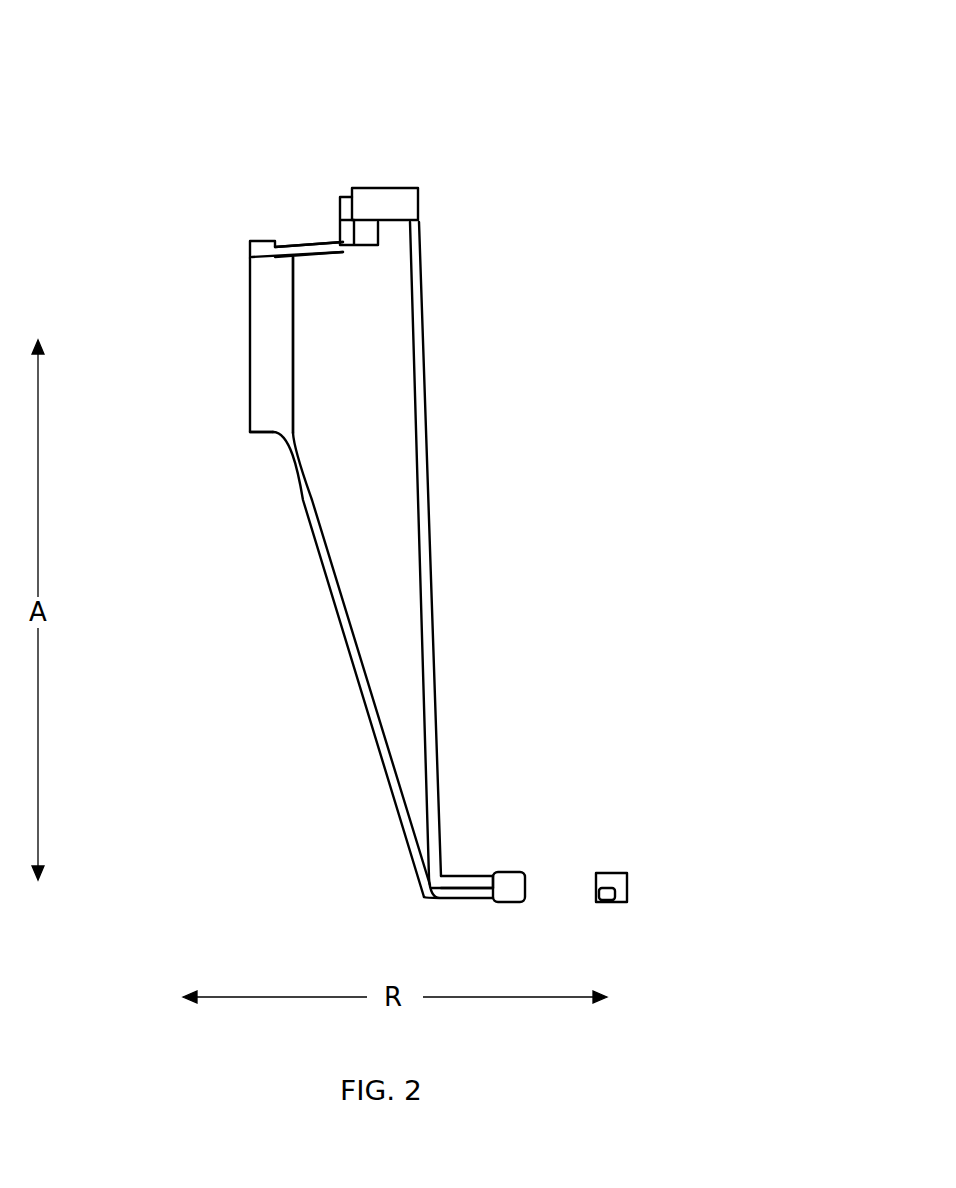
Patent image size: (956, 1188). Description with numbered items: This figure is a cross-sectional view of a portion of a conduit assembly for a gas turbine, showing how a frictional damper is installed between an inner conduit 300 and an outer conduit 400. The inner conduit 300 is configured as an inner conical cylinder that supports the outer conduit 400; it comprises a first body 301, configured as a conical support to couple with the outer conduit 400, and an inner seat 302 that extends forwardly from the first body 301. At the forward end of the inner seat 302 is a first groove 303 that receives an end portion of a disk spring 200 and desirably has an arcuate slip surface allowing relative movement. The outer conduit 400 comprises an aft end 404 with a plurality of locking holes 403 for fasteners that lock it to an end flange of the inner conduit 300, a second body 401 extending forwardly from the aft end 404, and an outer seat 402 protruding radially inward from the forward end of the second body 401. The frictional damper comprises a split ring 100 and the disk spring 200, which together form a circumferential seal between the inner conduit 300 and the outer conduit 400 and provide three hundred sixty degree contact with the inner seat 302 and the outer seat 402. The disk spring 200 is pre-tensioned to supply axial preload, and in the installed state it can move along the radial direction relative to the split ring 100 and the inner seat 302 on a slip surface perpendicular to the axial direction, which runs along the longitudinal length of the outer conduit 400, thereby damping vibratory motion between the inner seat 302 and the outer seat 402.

The split ring 100 is at (353, 227).
The disk spring 200 is at (325, 257).
The inner conduit 300 is at (298, 585).
The first body 301 is at (318, 528).
The inner seat 302 is at (262, 255).
The first groove 303 is at (273, 253).
The outer conduit 400 is at (430, 480).
The second body 401 is at (373, 210).
The outer seat 402 is at (430, 618).
The locking holes 403 is at (547, 885).
The aft end 404 is at (472, 878).